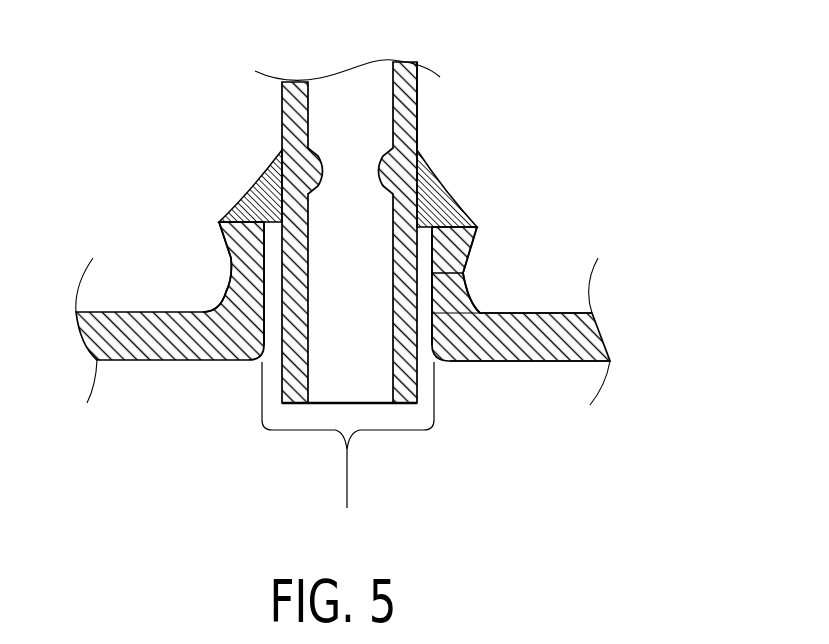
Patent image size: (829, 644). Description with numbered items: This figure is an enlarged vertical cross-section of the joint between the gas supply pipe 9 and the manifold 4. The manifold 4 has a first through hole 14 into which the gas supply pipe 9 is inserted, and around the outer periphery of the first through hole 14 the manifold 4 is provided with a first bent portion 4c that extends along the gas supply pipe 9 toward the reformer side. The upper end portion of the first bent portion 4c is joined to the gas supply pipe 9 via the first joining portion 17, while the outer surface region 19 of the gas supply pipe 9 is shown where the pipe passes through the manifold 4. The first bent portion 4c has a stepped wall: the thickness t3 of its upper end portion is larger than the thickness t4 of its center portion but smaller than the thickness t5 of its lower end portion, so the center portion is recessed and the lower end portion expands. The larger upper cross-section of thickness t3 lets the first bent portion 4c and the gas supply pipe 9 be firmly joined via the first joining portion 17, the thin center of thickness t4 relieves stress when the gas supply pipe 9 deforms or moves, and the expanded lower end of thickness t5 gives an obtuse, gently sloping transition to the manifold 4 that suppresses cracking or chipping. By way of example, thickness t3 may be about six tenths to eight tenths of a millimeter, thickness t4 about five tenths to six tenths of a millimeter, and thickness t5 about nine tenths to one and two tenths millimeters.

The gas supply pipe 9 is at (368, 205).
The outer surface of tube 19 is at (417, 133).
The first joining portion 17 is at (450, 195).
The manifold 4 is at (334, 334).
The first bent portion 4c is at (221, 243).
The thickness of the upper end portion of the first bent portion t3 is at (465, 238).
The thickness of the center portion of the first bent portion t4 is at (463, 275).
The thickness of the lower end portion of the first bent portion t5 is at (478, 362).
The first through hole 14 is at (348, 450).